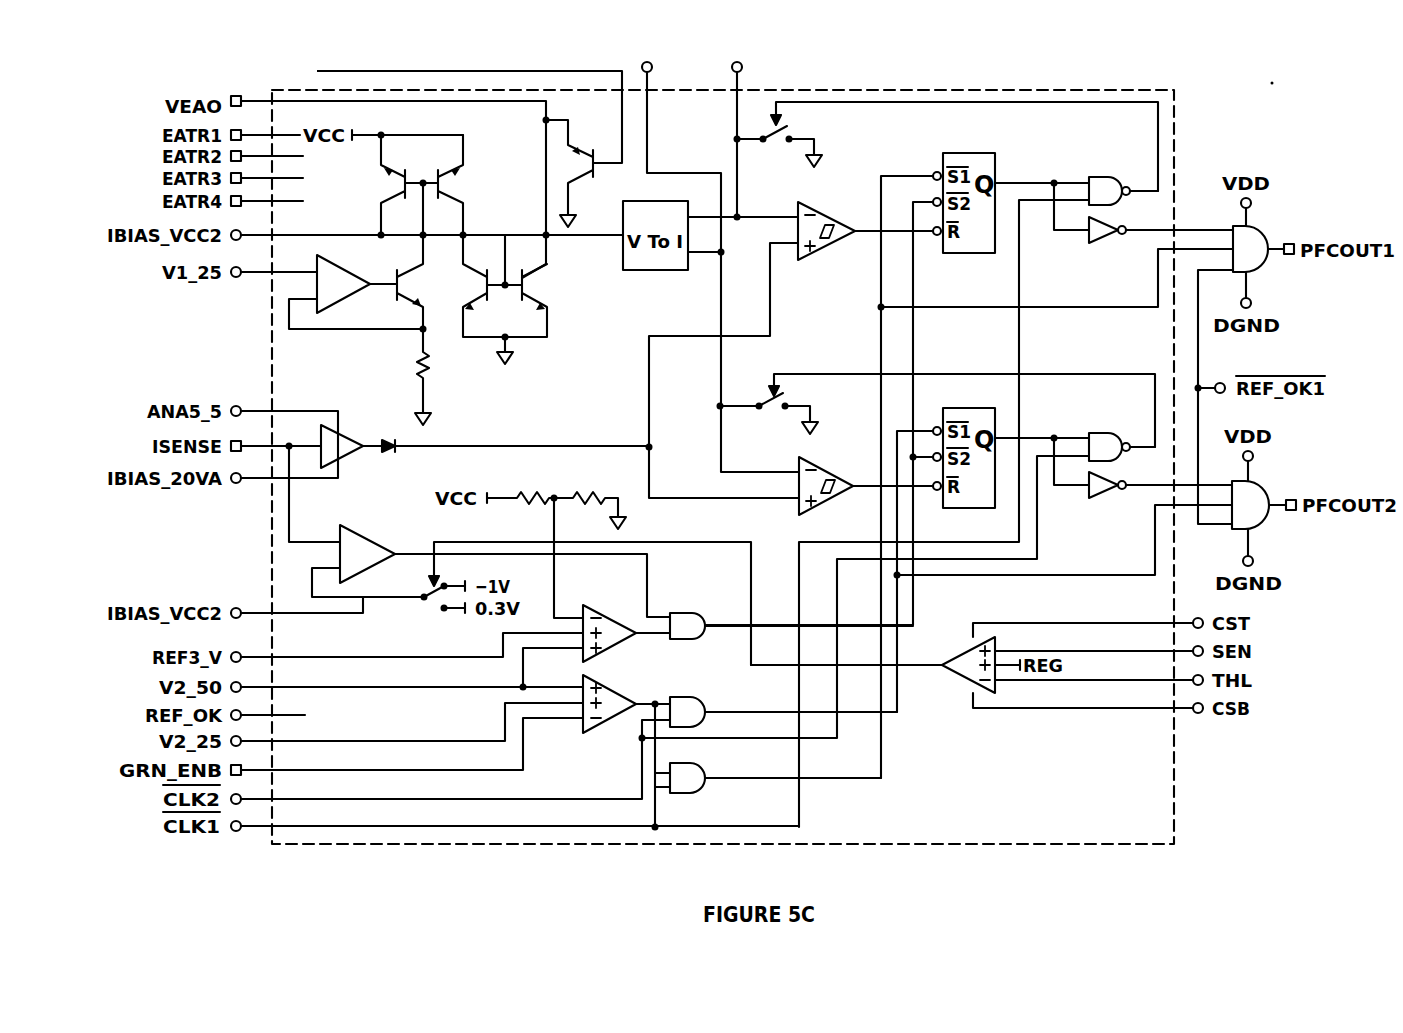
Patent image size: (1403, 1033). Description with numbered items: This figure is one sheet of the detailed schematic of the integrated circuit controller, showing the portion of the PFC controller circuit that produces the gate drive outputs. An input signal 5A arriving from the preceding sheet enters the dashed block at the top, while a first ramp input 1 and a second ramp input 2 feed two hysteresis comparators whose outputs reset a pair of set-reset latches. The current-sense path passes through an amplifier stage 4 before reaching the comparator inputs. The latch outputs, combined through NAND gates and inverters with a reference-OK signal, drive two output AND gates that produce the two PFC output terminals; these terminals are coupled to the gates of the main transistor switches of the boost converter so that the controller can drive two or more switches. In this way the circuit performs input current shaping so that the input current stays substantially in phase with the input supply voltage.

The gain-of-four current sense amplifier 4 is at (351, 446).
The RAMP1 input 1 is at (738, 125).
The RAMP2 input 2 is at (705, 252).
The signal from Figure 5A is at (300, 64).